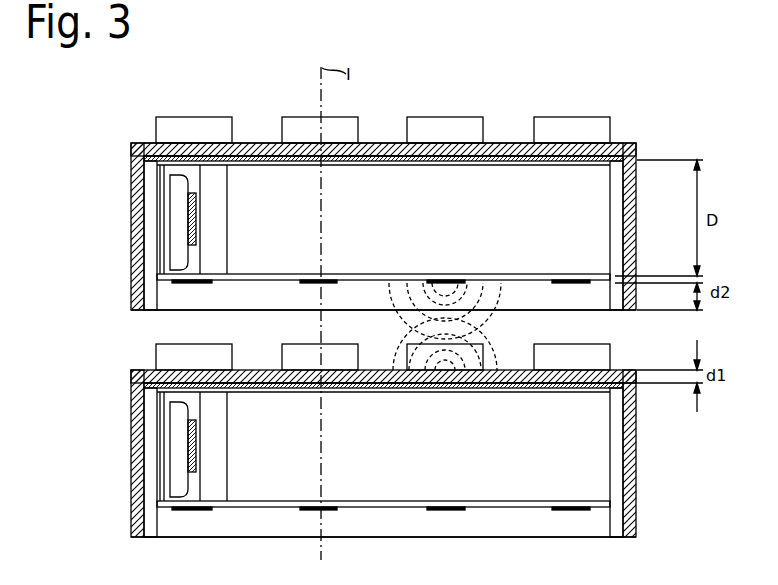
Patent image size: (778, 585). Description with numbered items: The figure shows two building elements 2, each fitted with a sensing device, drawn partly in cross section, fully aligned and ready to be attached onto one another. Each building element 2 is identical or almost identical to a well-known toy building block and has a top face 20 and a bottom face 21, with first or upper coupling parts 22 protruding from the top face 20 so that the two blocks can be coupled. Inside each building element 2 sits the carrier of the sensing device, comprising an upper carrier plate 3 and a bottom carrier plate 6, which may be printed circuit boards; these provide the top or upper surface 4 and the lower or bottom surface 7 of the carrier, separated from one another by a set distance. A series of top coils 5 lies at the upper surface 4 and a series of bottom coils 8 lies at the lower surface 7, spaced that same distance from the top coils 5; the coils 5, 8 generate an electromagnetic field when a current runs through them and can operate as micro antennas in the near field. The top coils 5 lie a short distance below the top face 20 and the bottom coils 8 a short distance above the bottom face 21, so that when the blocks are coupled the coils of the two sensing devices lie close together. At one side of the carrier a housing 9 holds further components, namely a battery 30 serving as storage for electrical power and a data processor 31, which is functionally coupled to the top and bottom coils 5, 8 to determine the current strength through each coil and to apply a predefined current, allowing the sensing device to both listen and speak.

The building element 2 is at (634, 152).
The upper carrier plate 3 is at (263, 159).
The top or upper surface 4 is at (380, 152).
The top coils 5 is at (335, 148).
The bottom carrier plate 6 is at (583, 271).
The lower or bottom surface 7 is at (526, 283).
The bottom coils 8 is at (442, 284).
The housing 9 is at (170, 175).
The top face of building element 20 is at (508, 152).
The bottom face of building element 21 is at (168, 311).
The first or upper coupling parts 22 is at (572, 128).
The battery 30 is at (180, 230).
The data processor 31 is at (205, 265).